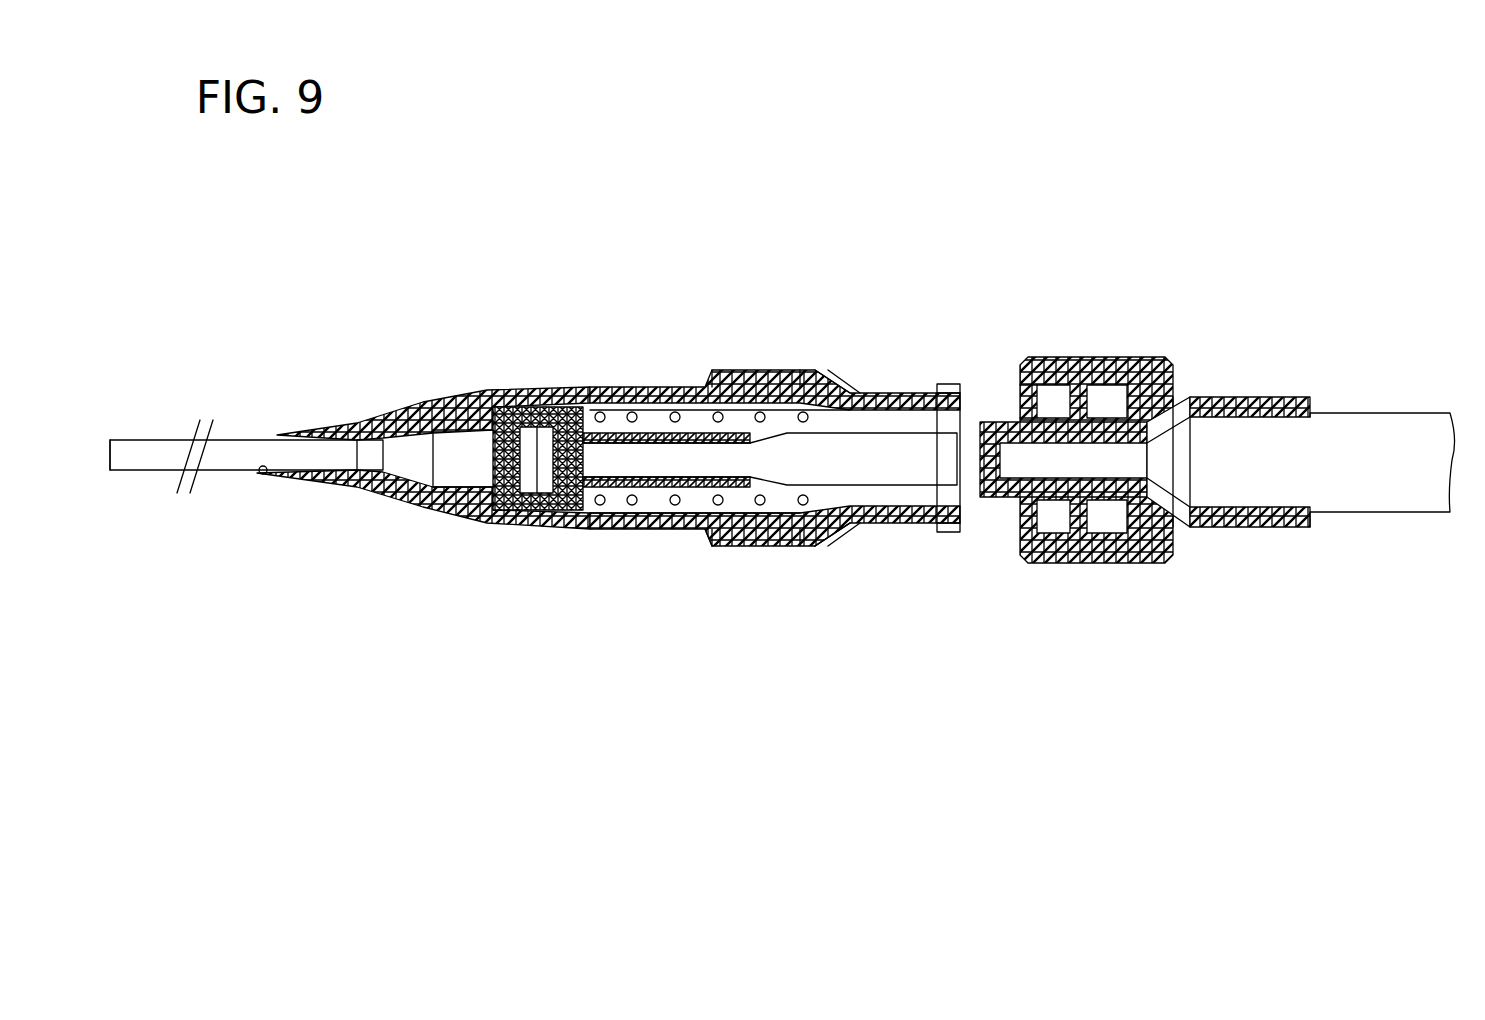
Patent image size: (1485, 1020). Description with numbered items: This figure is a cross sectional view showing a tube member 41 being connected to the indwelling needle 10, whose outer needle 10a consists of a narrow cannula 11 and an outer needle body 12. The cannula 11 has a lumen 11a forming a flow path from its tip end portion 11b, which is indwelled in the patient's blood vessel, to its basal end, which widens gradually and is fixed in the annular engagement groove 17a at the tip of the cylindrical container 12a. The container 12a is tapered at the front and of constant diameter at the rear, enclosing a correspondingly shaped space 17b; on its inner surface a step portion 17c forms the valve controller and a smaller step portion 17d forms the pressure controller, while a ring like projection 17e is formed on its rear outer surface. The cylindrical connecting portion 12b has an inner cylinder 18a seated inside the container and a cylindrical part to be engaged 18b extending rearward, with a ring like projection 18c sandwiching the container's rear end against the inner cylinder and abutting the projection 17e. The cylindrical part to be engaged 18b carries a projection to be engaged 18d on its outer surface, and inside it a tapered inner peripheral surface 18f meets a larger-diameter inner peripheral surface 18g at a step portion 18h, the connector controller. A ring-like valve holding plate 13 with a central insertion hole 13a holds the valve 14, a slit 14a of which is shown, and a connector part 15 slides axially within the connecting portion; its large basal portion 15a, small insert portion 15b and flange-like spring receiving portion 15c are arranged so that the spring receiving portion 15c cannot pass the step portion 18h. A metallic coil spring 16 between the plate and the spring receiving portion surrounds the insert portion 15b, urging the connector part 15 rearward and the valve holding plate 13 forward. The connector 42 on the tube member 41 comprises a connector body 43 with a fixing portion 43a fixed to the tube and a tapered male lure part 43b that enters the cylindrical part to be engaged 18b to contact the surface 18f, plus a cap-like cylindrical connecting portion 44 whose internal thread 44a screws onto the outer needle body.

The indwelling needle 10 is at (774, 404).
The outer needle 10a is at (545, 421).
The cannula 11 is at (334, 430).
The lumen 11a is at (262, 476).
The tip end portion 11b is at (117, 438).
The outer needle body 12 is at (794, 416).
The cylindrical container 12a is at (665, 386).
The cylindrical connecting portion 12b is at (794, 456).
The valve holding plate 13 is at (590, 531).
The insertion hole 13a is at (592, 443).
The valve 14 is at (492, 455).
The seal slit 14a is at (553, 511).
The connector part 15 is at (790, 585).
The basal portion 15a is at (840, 563).
The insert portion 15b is at (727, 548).
The spring receiving portion 15c is at (787, 548).
The coil spring 16 is at (620, 521).
The annular engagement groove 17a is at (365, 489).
The space 17b is at (432, 493).
The step portion 17c is at (505, 528).
The step portion 17d is at (585, 400).
The ring like projection 17e is at (708, 540).
The inner cylinder 18a is at (722, 384).
The cylindrical part to be engaged 18b is at (858, 394).
The ring like projection 18c is at (790, 384).
The projection to be engaged 18d is at (848, 528).
The inner peripheral surface 18f is at (962, 500).
The inner peripheral surface 18g is at (670, 524).
The step portion 18h is at (808, 433).
The tube member 41 is at (1375, 427).
The connector 42 is at (1214, 484).
The connector body 43 is at (1100, 500).
The fixing portion 43a is at (1189, 507).
The male lure part 43b is at (1012, 500).
The cylindrical connecting portion 44 is at (1128, 360).
The internal thread 44a is at (1022, 412).